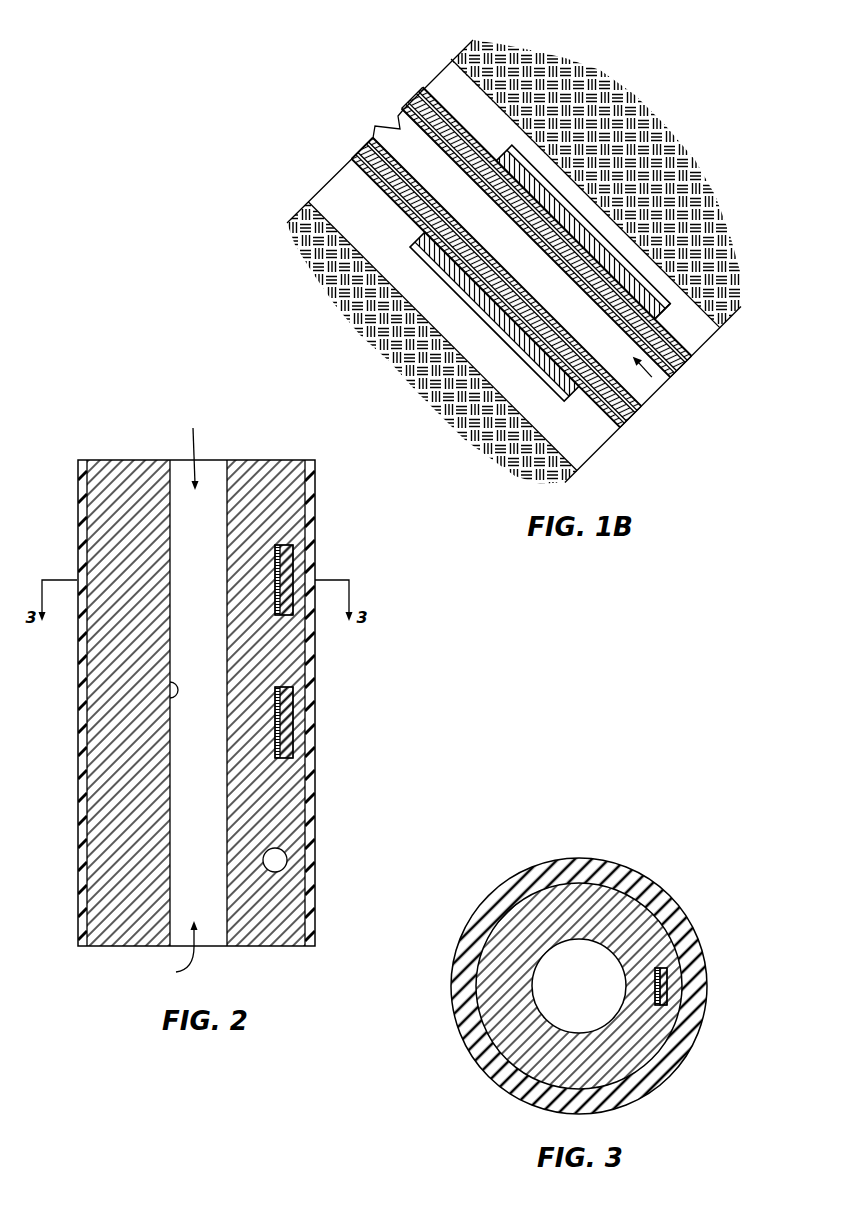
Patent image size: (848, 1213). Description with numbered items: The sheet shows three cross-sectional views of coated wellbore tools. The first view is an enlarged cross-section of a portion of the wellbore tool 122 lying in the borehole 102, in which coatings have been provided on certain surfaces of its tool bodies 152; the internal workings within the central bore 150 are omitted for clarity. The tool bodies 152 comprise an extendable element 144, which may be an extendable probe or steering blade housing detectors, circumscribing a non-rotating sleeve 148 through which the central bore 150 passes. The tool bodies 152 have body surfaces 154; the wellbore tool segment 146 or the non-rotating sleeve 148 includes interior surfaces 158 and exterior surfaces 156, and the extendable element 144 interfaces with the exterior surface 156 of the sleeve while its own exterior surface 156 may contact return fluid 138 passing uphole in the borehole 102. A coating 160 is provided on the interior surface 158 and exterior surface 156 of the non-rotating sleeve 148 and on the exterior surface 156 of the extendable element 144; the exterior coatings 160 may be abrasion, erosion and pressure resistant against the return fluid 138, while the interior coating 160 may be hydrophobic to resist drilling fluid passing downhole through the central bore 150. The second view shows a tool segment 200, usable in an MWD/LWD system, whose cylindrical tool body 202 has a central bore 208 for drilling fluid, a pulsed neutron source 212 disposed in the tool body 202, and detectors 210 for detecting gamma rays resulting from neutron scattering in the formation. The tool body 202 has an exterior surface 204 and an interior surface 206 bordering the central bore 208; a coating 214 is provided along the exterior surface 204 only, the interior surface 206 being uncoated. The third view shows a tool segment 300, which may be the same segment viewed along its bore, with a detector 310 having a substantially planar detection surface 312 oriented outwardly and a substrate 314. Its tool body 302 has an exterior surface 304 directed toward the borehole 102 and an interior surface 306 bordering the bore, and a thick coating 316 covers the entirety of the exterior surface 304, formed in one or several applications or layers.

In FIG. 1B, the borehole 102 is at (345, 212).
In FIG. 1B, the wellbore tool 122 is at (652, 80).
In FIG. 1B, the return fluid 138 is at (477, 107).
In FIG. 1B, the extendable element 144 is at (597, 226).
In FIG. 1B, the wellbore tool segment 146 is at (672, 318).
In FIG. 1B, the non-rotating sleeve 148 is at (390, 273).
In FIG. 1B, the central bore 150 is at (655, 378).
In FIG. 1B, the tool bodies 152 is at (513, 177).
In FIG. 1B, the body surfaces 154 is at (462, 317).
In FIG. 1B, the exterior surface 156 is at (617, 262).
In FIG. 1B, the interior surface 158 is at (398, 116).
In FIG. 1B, the coating 160 is at (440, 103).
In FIG. 2, the tool segment 200 is at (63, 430).
In FIG. 2, the tool body 202 is at (114, 488).
In FIG. 2, the exterior surface 204 is at (313, 492).
In FIG. 2, the interior surface 206 is at (226, 486).
In FIG. 2, the central bore 208 is at (172, 697).
In FIG. 2, the detectors 210 is at (288, 560).
In FIG. 2, the pulsed neutron source 212 is at (288, 858).
In FIG. 2, the coating 214 is at (82, 635).
In FIG. 3, the tool segment 300 is at (656, 822).
In FIG. 3, the tool body 302 is at (565, 903).
In FIG. 3, the exterior surface 304 is at (480, 983).
In FIG. 3, the interior surface 306 is at (503, 1086).
In FIG. 3, the detector 310 is at (668, 960).
In FIG. 3, the detection surface 312 is at (668, 978).
In FIG. 3, the substrate 314 is at (653, 997).
In FIG. 3, the coating 316 is at (507, 893).